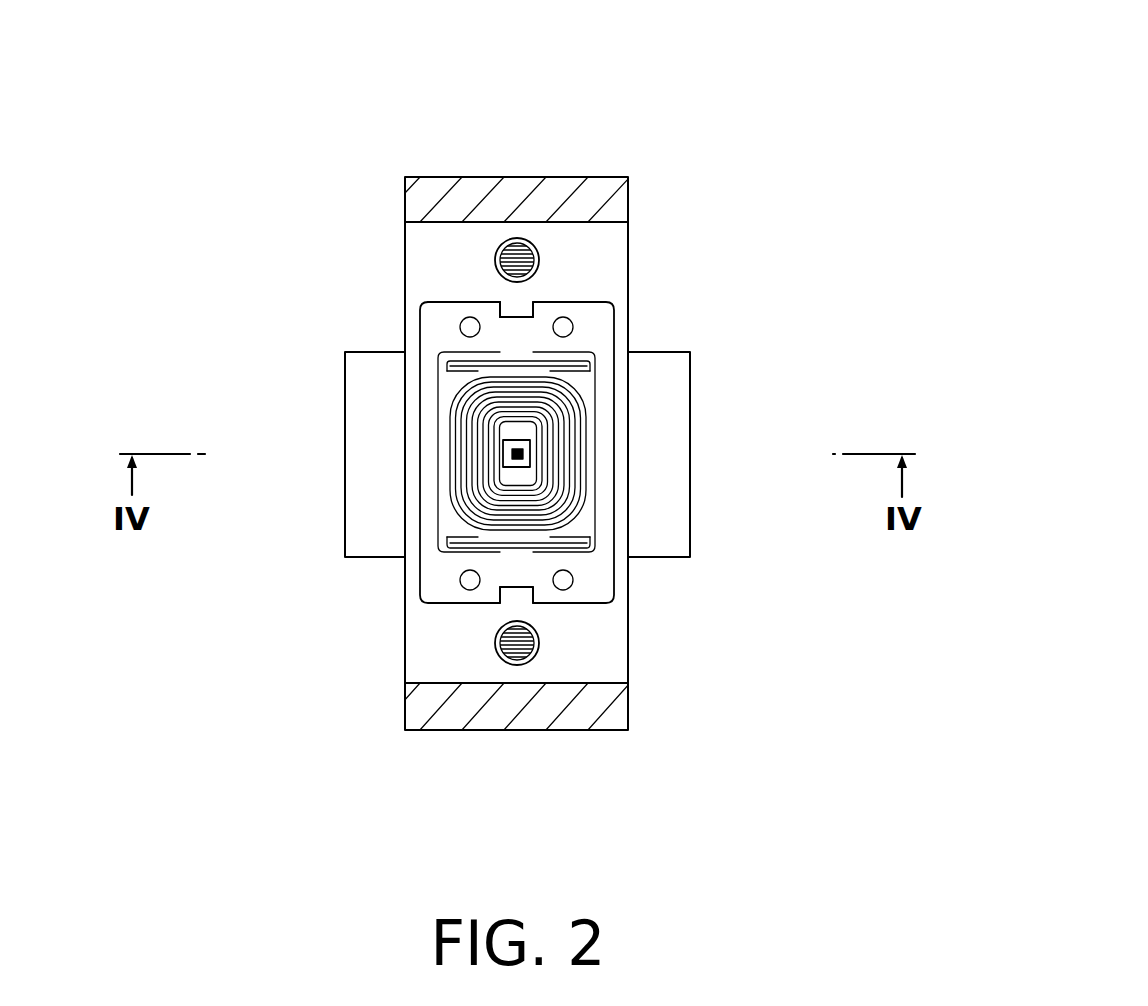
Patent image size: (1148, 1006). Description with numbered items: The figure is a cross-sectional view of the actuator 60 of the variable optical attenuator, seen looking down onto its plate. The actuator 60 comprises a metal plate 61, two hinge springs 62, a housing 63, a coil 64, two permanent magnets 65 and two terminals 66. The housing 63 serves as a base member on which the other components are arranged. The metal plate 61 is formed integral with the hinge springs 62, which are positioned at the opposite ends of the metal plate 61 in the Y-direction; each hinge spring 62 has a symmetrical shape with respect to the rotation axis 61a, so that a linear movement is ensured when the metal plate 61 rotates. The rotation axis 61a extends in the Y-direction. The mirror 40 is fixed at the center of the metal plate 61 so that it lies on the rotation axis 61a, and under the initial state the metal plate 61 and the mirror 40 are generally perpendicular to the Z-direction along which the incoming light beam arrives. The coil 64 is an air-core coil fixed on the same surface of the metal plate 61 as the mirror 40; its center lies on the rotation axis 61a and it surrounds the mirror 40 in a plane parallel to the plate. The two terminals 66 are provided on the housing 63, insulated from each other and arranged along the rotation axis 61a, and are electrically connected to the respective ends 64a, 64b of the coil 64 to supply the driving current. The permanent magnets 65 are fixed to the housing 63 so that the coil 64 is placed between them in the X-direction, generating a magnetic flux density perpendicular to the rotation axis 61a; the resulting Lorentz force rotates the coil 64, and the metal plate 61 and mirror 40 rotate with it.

The actuator 60 is at (683, 107).
The mirror 40 is at (503, 455).
The metal plate 61 is at (585, 523).
The rotation axis 61a is at (473, 303).
The hinge springs 62 is at (585, 362).
The housing 63 is at (605, 648).
The coil 64 is at (567, 430).
The end of the coil 64a is at (530, 310).
The end of the coil 64b is at (520, 605).
The permanent magnets 65 is at (364, 500).
The terminals 66 is at (518, 770).